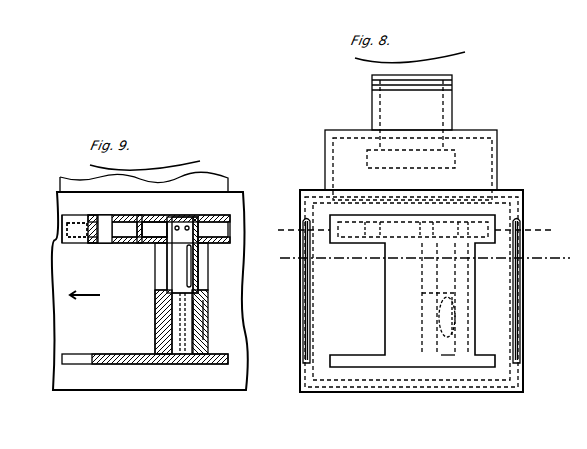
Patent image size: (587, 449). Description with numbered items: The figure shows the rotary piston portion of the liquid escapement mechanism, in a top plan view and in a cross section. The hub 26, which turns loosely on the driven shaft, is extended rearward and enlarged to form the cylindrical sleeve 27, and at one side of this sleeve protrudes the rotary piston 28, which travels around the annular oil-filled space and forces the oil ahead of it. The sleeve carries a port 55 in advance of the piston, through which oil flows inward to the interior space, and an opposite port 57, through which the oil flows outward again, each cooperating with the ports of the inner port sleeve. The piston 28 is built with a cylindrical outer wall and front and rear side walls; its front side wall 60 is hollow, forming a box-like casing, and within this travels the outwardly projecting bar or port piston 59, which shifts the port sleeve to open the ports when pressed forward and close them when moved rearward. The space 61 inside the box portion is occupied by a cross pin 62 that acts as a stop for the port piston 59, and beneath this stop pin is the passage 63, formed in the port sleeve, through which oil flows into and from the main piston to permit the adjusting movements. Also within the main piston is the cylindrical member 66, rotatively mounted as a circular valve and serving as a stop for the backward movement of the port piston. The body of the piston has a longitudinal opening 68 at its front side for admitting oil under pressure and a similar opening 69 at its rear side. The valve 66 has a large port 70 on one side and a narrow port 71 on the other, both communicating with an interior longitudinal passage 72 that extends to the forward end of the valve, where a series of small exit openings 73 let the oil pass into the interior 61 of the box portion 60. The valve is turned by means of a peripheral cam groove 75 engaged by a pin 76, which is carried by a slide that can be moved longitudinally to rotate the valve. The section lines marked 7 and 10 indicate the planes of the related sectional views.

In FIG. 8, the section line 7- 7 is at (416, 231).
In FIG. 8, the section line 10- 10 is at (422, 259).
In FIG. 8, the hub 26 is at (412, 112).
In FIG. 9, the cylindrical sleeve 27 is at (86, 314).
In FIG. 8, the cylindrical sleeve 27 is at (325, 160).
In FIG. 9, the rotary piston 28 is at (157, 330).
In FIG. 8, the rotary piston 28 is at (431, 299).
In FIG. 8, the port 55 is at (303, 346).
In FIG. 8, the port 57 is at (516, 355).
In FIG. 9, the port piston 59 is at (143, 227).
In FIG. 9, the front side wall 60 is at (123, 215).
In FIG. 8, the front side wall 60 is at (357, 243).
In FIG. 9, the space 61 is at (213, 232).
In FIG. 9, the cross pin 62 is at (97, 243).
In FIG. 9, the passage 63 is at (90, 233).
In FIG. 9, the cylindrical member 66 is at (193, 323).
In FIG. 8, the cylindrical member 66 is at (443, 332).
In FIG. 9, the longitudinal opening 68 is at (185, 278).
In FIG. 9, the longitudinal opening 69 is at (203, 278).
In FIG. 9, the large port 70 is at (177, 253).
In FIG. 9, the narrow port 71 is at (185, 270).
In FIG. 9, the interior longitudinal passage 72 is at (180, 257).
In FIG. 9, the exit openings 73 is at (178, 227).
In FIG. 9, the peripheral cam groove 75 is at (203, 333).
In FIG. 8, the peripheral cam groove 75 is at (452, 320).
In FIG. 8, the pin 76 is at (448, 357).